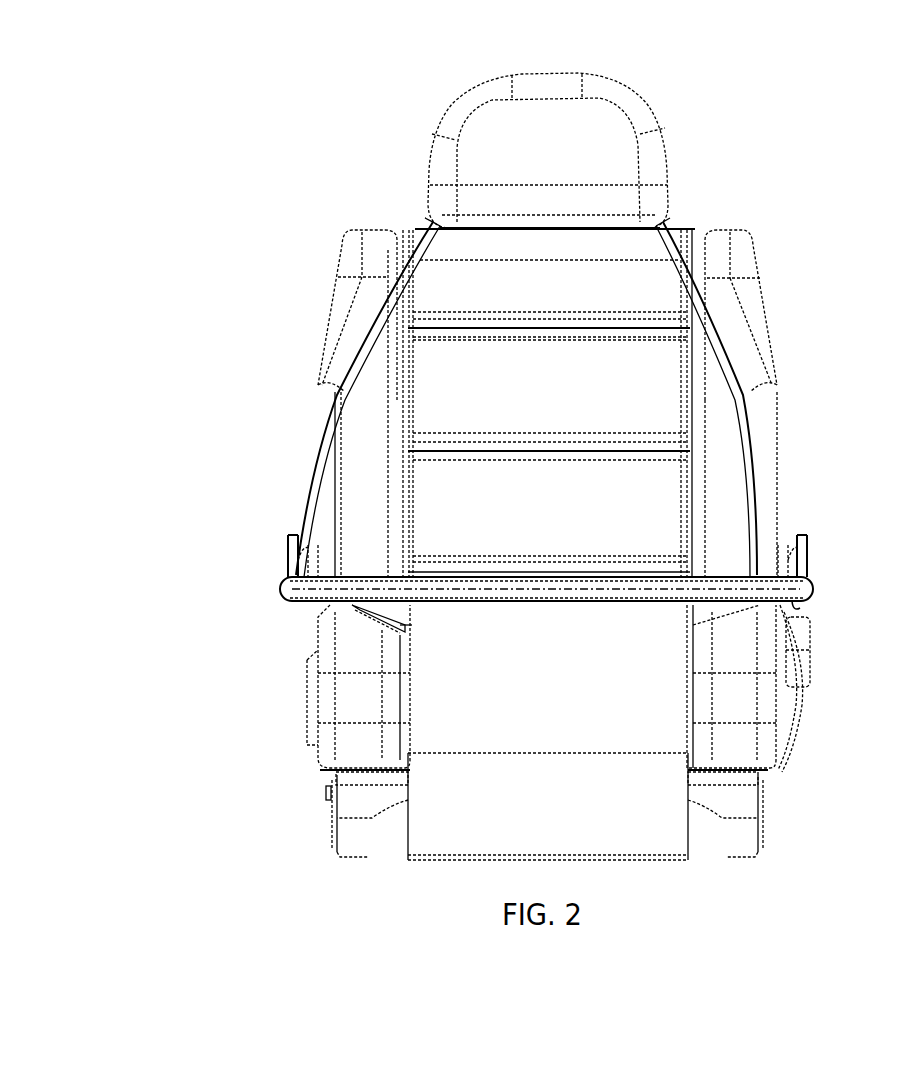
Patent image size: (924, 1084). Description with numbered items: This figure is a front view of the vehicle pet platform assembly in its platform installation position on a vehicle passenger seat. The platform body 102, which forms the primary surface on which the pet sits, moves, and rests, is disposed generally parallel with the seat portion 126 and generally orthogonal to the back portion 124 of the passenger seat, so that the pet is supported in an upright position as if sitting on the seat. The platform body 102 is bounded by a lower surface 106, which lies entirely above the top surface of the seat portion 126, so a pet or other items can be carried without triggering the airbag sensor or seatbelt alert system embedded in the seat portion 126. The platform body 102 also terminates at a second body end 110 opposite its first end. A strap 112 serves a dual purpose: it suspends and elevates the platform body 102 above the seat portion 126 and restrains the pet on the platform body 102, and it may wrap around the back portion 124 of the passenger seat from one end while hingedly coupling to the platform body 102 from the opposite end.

The platform body 102 is at (322, 590).
The lower surface 106 is at (352, 605).
The second body end 110 is at (808, 590).
The strap 112 is at (712, 295).
The back portion 124 is at (472, 323).
The seat portion 126 is at (737, 658).